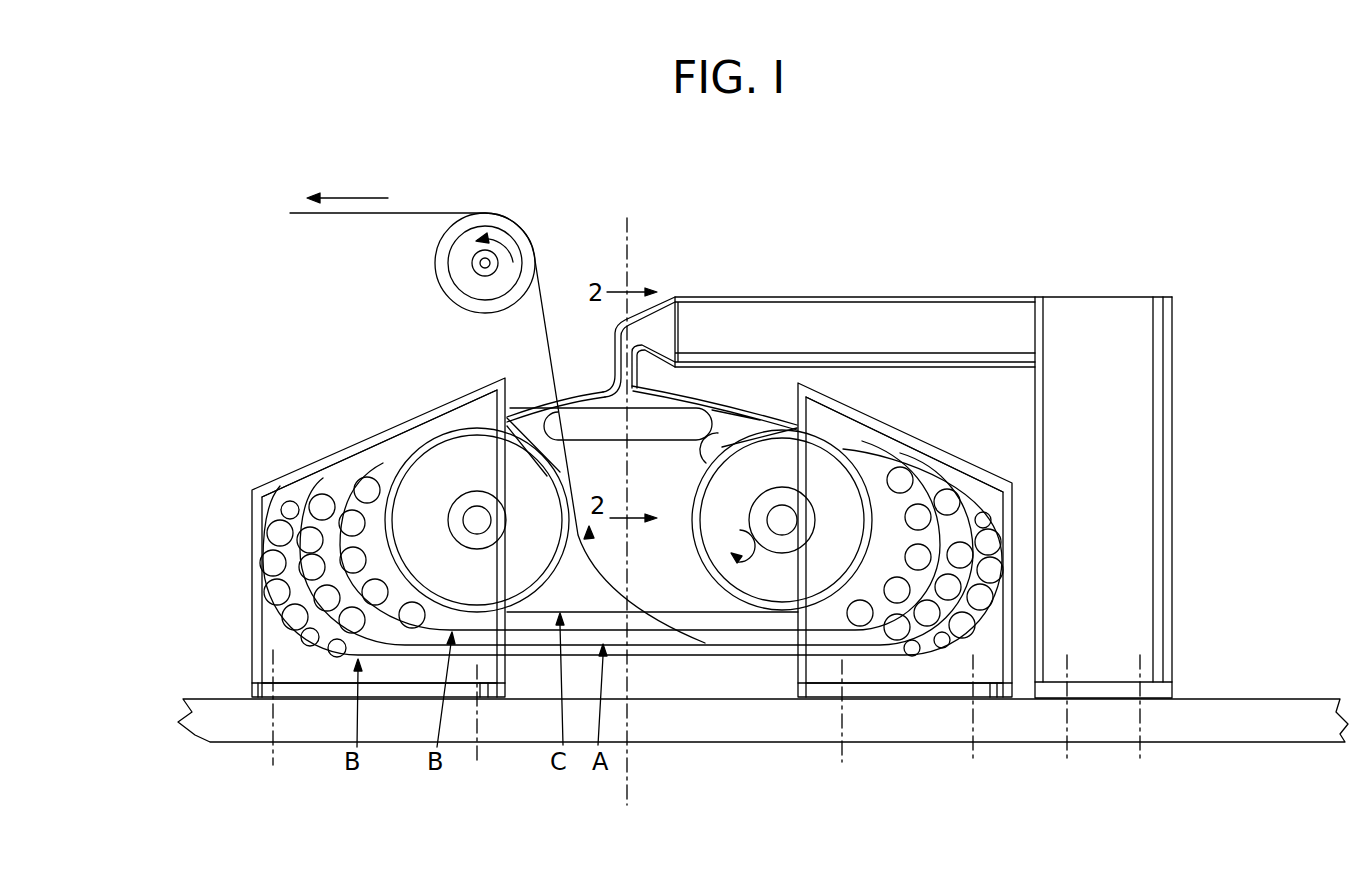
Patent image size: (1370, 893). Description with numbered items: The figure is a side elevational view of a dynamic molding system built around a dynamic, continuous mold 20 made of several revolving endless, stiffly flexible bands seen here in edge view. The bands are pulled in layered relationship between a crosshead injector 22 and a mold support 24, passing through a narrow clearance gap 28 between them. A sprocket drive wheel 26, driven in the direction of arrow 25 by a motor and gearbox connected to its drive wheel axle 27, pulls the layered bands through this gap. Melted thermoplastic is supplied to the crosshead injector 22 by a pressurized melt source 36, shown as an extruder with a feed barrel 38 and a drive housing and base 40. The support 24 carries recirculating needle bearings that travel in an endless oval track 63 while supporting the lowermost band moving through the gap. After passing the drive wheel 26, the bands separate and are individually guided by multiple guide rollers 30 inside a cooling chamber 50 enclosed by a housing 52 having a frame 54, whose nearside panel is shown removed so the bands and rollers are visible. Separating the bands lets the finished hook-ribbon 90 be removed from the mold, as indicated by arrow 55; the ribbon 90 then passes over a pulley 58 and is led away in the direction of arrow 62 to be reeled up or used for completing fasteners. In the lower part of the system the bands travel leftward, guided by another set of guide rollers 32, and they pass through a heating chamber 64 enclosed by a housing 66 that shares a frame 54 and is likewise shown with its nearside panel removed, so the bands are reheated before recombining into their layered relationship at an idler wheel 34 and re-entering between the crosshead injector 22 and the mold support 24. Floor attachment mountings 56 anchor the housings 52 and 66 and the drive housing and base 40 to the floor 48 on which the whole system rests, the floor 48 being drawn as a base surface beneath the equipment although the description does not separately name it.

The dynamic continuous mold 20 is at (314, 294).
The crosshead injector 22 is at (603, 351).
The mold support 24 is at (644, 432).
The arrow indicating drive direction 25 is at (729, 538).
The sprocket drive wheel 26 is at (782, 519).
The drive wheel axle 27 is at (762, 514).
The narrow clearance gap 28 is at (703, 396).
The guide rollers 30 is at (995, 535).
The guide rollers 32 is at (365, 482).
The idler wheel 34 is at (478, 477).
The pressurized melt source 36 is at (997, 242).
The feed barrel 38 is at (760, 312).
The drive housing and base 40 is at (1148, 468).
The base 48 is at (170, 696).
The cooling chamber 50 is at (985, 655).
The housing 52 is at (922, 429).
The frame 54 is at (268, 486).
The arrow indicating ribbon removal 55 is at (603, 574).
The floor attachment mountings 56 is at (273, 712).
The pulley 58 is at (463, 297).
The arrow indicating ribbon lead-away direction 62 is at (370, 198).
The endless oval track 63 is at (716, 452).
The heating chamber 64 is at (306, 668).
The housing 66 is at (241, 545).
The hook-ribbon 90 is at (473, 394).